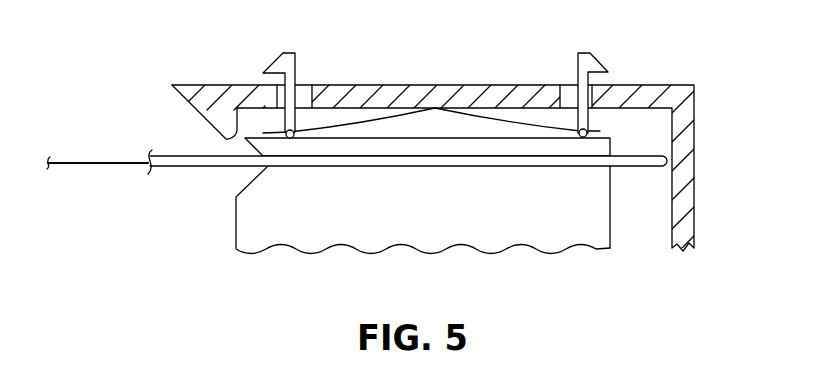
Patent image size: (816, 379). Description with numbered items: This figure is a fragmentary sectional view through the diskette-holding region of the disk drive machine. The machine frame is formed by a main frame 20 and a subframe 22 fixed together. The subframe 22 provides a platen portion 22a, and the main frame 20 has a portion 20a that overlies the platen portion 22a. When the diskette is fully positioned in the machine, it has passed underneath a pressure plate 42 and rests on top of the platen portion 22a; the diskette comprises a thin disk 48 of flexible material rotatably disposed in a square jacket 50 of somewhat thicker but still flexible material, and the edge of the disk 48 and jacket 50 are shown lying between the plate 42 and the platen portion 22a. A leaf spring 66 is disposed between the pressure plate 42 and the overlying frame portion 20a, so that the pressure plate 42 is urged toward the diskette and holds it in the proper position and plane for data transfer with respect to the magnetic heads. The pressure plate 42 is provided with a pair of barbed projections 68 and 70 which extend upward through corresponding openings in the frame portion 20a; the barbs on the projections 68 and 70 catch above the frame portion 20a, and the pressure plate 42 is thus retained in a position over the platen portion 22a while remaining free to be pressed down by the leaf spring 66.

The main frame 20 is at (696, 172).
The portion of the frame 20a is at (220, 85).
The subframe 22 is at (337, 232).
The platen portion 22a is at (559, 150).
The pressure plate 42 is at (387, 148).
The disk 48 is at (100, 164).
The jacket 50 is at (199, 167).
The leaf spring 66 is at (498, 122).
The barbed projection 68 is at (579, 52).
The barbed projection 70 is at (286, 52).